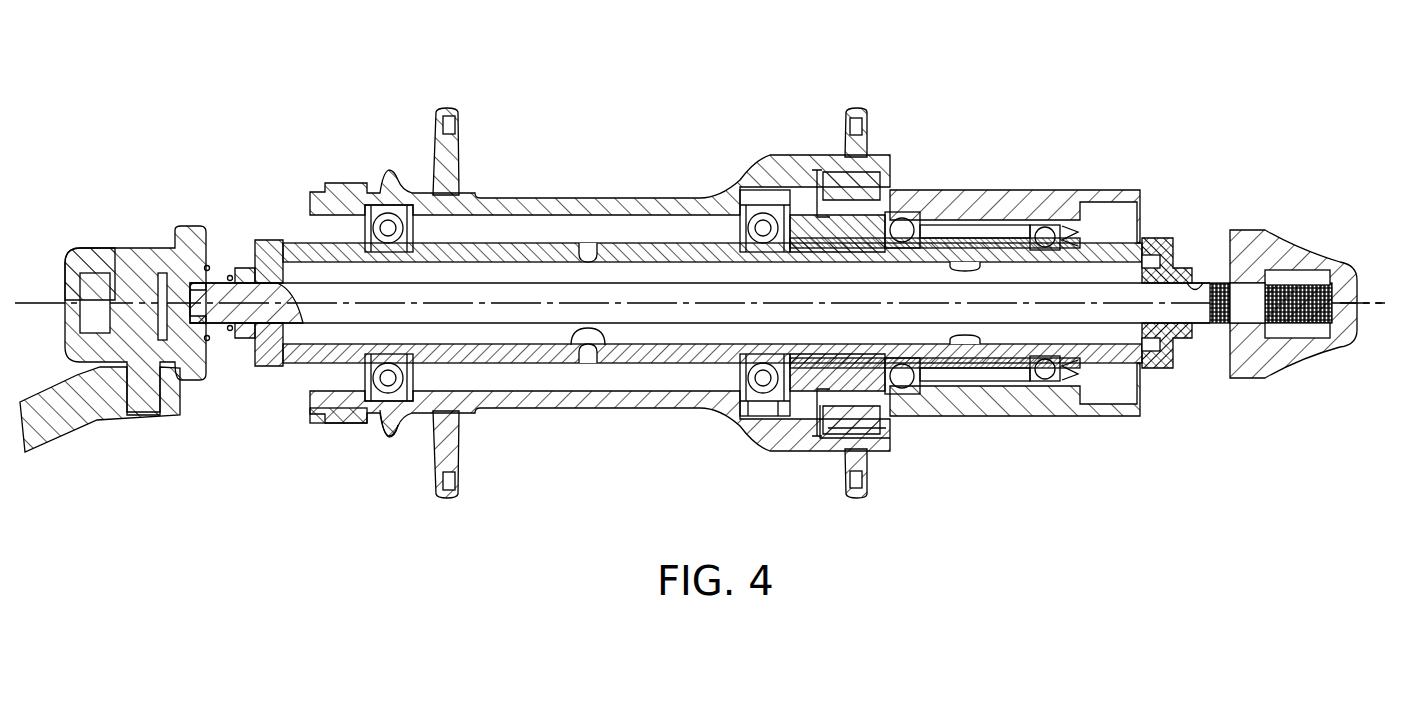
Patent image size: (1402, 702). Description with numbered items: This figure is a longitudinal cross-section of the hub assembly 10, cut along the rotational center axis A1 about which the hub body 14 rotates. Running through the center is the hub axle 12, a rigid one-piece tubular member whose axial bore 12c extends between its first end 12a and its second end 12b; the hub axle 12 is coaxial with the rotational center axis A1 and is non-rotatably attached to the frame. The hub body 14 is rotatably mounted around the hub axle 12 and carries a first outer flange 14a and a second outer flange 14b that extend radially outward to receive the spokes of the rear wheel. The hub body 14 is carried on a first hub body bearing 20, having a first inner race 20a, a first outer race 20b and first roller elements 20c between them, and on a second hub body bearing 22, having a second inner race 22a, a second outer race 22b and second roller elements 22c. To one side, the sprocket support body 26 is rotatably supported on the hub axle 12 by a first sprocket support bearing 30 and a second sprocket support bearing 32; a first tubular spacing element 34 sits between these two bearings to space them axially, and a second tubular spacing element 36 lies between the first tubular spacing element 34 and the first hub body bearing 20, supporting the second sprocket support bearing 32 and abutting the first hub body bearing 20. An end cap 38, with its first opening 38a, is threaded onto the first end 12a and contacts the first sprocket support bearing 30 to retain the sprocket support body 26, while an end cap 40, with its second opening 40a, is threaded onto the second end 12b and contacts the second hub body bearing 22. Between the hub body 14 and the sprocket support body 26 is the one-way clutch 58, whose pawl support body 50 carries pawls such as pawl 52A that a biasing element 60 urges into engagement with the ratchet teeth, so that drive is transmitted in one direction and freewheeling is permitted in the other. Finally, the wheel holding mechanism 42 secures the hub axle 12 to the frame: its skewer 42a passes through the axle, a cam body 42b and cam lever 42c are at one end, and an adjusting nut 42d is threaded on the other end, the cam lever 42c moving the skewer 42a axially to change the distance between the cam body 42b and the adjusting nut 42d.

The hub assembly 10 is at (708, 60).
The hub axle 12 is at (620, 240).
The first end 12a is at (1175, 340).
The second end 12b is at (265, 335).
The axial bore 12c is at (612, 346).
The hub body 14 is at (540, 195).
The first outer flange 14a is at (852, 107).
The second outer flange 14b is at (447, 107).
The first hub body bearing 20 is at (728, 230).
The first inner race 20a is at (766, 345).
The first outer race 20b is at (778, 402).
The first roller elements 20c is at (768, 401).
The second hub body bearing 22 is at (428, 232).
The second inner race 22a is at (400, 345).
The second outer race 22b is at (405, 425).
The second roller elements 22c is at (380, 402).
The sprocket support body 26 is at (975, 186).
The first sprocket support bearing 30 is at (1043, 224).
The second sprocket support bearing 32 is at (906, 210).
The first tubular spacing element 34 is at (985, 382).
The second tubular spacing element 36 is at (850, 352).
The end cap 38 is at (1155, 236).
The first opening 38a is at (1197, 281).
The end cap 40 is at (268, 237).
The second opening 40a is at (213, 282).
The wheel holding mechanism 42 is at (145, 214).
The skewer 42a is at (218, 322).
The cam body 42b is at (105, 250).
The cam lever 42c is at (60, 450).
The adjusting nut 42d is at (1290, 250).
The pawl support body 50 is at (782, 187).
The pawl 52A is at (873, 200).
The one-way clutch 58 is at (834, 150).
The biasing element 60 is at (884, 432).
The rotational center axis A1 is at (1365, 306).